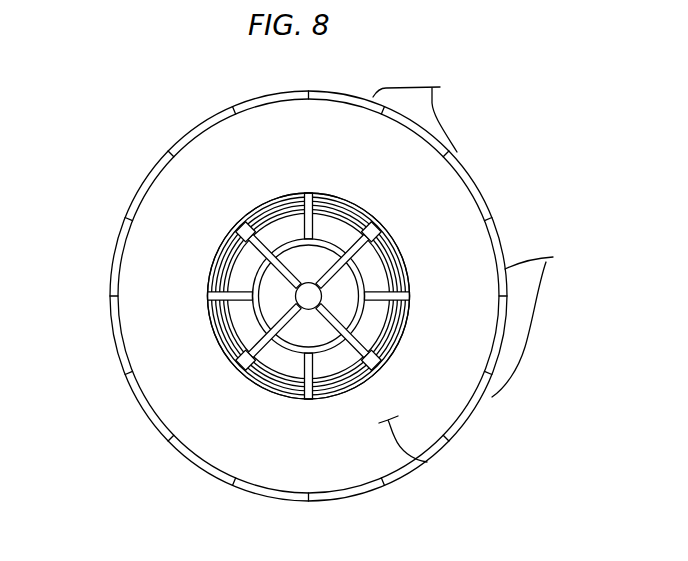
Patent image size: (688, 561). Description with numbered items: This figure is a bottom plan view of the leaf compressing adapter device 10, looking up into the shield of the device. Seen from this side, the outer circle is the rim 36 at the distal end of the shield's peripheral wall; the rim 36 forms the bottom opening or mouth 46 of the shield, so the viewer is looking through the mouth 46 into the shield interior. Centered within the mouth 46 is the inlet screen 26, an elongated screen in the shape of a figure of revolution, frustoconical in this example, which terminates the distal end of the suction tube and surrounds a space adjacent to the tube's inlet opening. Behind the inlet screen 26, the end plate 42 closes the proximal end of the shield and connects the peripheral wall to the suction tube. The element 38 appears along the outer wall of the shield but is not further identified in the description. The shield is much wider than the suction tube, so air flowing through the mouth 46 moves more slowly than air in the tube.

The assembly 10 is at (311, 291).
The inlet screen 26 is at (356, 199).
The rim 36 is at (424, 116).
The tab 38 is at (536, 321).
The end plate 42 is at (151, 254).
The bottom opening or mouth 46 is at (427, 462).